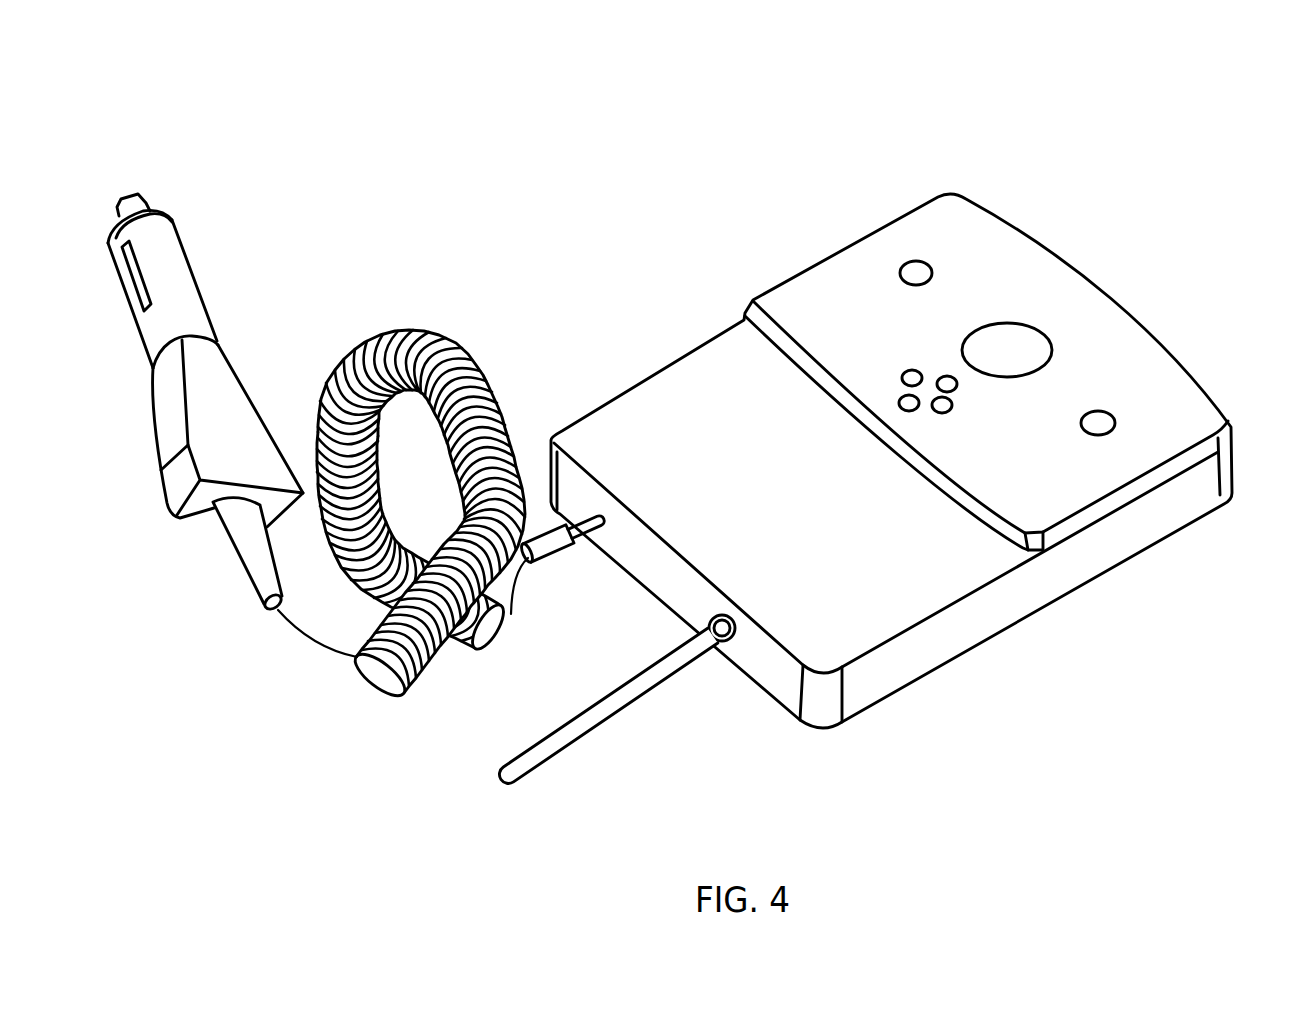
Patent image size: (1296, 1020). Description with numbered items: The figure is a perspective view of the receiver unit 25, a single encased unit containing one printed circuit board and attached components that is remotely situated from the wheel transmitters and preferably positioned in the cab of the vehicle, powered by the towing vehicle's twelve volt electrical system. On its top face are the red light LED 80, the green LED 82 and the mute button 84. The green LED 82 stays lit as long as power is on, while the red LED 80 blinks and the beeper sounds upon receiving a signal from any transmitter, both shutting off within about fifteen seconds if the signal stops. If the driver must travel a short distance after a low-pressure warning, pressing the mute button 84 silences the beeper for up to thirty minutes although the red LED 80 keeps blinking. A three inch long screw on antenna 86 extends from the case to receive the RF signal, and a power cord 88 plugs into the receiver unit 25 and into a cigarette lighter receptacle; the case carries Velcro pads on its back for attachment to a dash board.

The receiver unit 25 is at (1047, 135).
The red light LED 80 is at (903, 265).
The green LED 82 is at (1115, 418).
The mute button 84 is at (1017, 345).
The screw on antenna 86 is at (603, 723).
The power cord 88 is at (452, 637).